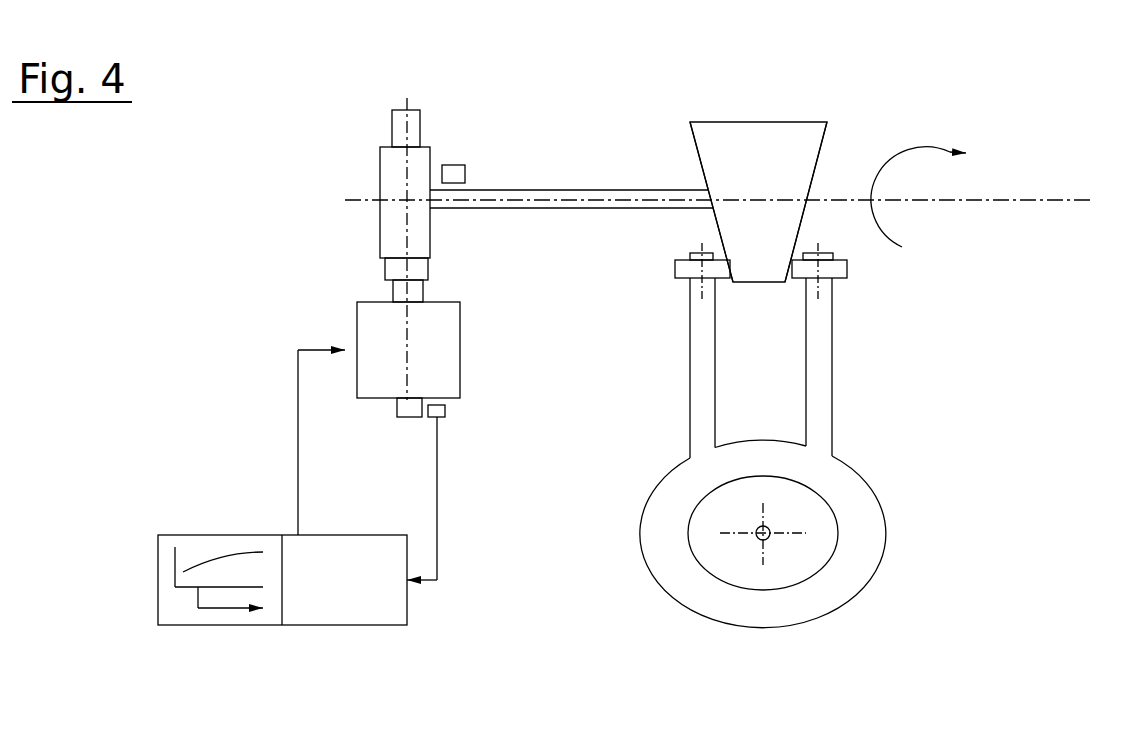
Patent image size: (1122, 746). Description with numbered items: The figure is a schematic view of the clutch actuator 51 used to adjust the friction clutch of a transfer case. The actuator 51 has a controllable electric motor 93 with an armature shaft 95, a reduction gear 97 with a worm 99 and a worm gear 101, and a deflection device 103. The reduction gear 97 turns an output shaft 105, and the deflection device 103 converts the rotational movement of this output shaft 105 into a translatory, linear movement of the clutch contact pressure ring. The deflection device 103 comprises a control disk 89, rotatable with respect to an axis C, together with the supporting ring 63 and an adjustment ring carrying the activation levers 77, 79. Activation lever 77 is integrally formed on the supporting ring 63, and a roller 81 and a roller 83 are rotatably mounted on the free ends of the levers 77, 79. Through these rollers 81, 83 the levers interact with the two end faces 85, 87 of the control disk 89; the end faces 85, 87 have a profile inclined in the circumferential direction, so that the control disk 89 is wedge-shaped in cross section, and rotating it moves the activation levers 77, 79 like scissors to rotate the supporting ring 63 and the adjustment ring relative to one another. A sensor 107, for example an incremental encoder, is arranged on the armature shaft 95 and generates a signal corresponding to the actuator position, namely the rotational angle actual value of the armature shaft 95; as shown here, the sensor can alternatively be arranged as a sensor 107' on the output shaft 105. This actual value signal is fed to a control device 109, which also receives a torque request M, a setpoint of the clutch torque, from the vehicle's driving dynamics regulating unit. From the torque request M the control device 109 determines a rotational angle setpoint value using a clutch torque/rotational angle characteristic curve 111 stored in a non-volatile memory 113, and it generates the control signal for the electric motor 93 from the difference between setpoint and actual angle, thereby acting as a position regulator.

The actuator 51 is at (625, 653).
The supporting ring 63 is at (858, 525).
The activation lever 77 is at (817, 363).
The activation lever 79 is at (707, 375).
The roller 81 is at (833, 270).
The roller 83 is at (687, 268).
The end face 85 is at (830, 133).
The end face 87 is at (698, 160).
The control disk 89 is at (743, 143).
The electric motor 93 is at (383, 318).
The armature shaft 95 is at (410, 407).
The reduction gear 97 is at (333, 173).
The worm 99 is at (402, 268).
The worm gear 101 is at (398, 222).
The deflection device 103 is at (668, 223).
The output shaft 105 is at (553, 190).
The sensor 107 is at (489, 403).
The sensor 107' is at (480, 145).
The control device 109 is at (383, 597).
The clutch torque/rotational angle characteristic curve 111 is at (225, 578).
The non-volatile memory 113 is at (177, 600).
The roller axis A is at (770, 535).
The axis C is at (1040, 200).
The torque request M is at (198, 535).